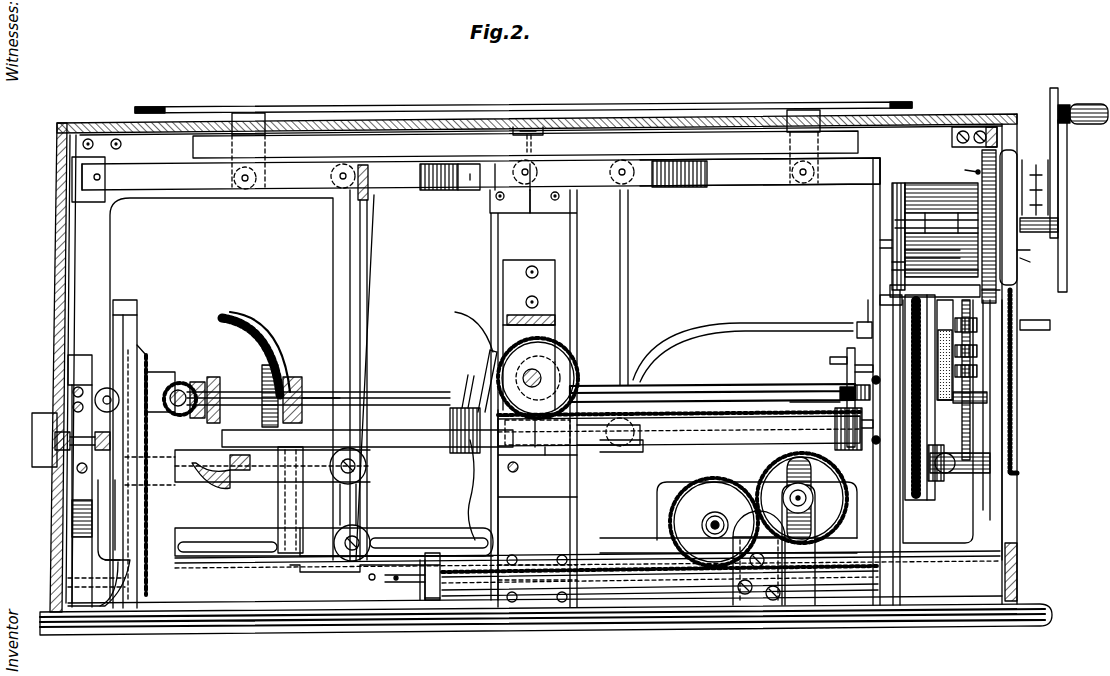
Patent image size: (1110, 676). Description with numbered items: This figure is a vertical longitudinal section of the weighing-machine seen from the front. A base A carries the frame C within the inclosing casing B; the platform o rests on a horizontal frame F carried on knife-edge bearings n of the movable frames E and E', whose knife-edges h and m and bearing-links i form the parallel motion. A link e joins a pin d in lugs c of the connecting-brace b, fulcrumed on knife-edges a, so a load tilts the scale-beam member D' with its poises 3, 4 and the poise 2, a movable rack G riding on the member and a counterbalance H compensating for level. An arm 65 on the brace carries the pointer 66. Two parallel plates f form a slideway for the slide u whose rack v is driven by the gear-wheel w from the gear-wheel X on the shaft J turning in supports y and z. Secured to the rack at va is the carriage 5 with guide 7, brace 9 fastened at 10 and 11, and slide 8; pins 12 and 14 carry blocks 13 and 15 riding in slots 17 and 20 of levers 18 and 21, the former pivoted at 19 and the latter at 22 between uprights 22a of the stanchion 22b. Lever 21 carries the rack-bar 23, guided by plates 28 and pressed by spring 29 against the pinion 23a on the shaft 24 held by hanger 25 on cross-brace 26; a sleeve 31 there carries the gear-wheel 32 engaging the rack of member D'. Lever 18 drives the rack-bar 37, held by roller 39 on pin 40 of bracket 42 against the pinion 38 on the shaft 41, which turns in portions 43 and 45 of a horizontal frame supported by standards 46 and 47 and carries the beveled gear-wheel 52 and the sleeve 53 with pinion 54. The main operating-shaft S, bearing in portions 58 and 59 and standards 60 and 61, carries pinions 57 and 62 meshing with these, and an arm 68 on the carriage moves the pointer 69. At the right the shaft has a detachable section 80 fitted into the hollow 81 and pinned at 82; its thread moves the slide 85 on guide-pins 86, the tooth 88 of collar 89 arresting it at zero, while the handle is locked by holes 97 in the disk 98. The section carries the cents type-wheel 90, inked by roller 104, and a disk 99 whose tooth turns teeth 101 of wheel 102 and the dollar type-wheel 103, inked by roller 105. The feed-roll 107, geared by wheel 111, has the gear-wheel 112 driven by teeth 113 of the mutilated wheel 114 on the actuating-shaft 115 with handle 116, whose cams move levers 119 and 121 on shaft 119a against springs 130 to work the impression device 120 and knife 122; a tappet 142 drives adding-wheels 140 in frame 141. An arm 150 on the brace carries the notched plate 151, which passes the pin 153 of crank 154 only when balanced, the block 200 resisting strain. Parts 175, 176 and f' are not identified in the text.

The inclosing casing B is at (56, 249).
The base A is at (268, 627).
The slide u is at (850, 626).
The platform or table o is at (605, 107).
The indicating hand or pointer 66 is at (530, 133).
The horizontal frame F is at (858, 141).
The movable frame E is at (481, 192).
The additional movable frame E' is at (760, 192).
The knife-edge bearings h is at (100, 177).
The knife-edge bearings n is at (245, 191).
The side brace 9 is at (440, 186).
The securing points of side brace 10 is at (365, 198).
The guide or slideway 7 is at (345, 318).
The bearing-links i is at (537, 172).
The roller f' is at (607, 172).
The upwardly-extending arm 65 is at (499, 240).
The frame or supporting structure C is at (572, 495).
The link e is at (628, 276).
The cross-brace 26 is at (556, 310).
The hanger 25 is at (556, 338).
The transverse shaft 24 is at (538, 378).
The sleeve 31 is at (538, 380).
The gear-wheel 32 is at (575, 376).
The pinion or gear-wheel 23a is at (464, 327).
The vertical rack-bar 23 is at (485, 352).
The spring 29 is at (464, 392).
The poise 3 is at (450, 420).
The main operating-shaft S is at (716, 385).
The arm or member 150 is at (714, 335).
The scale-beam member D' is at (679, 439).
The movable rack G is at (780, 440).
The lugs or offsets c is at (625, 445).
The pin d is at (645, 440).
The knife-edge bearings a is at (537, 420).
The connecting-brace b is at (549, 460).
The gear-wheel w is at (660, 510).
The vertical support y is at (690, 500).
The vertical support z is at (806, 553).
The transverse shaft J is at (810, 498).
The fulcrum or pivot 19 is at (757, 560).
The rack v is at (612, 577).
The parallel plate f is at (660, 620).
The securing point of side brace 11 is at (436, 576).
The securing point of carriage va is at (395, 582).
The forwardly-projecting arm 68 is at (418, 599).
The indicating hand or pointer 69 is at (428, 601).
The carriage 5 is at (345, 566).
The beveled pinion 62 is at (358, 441).
The lever 21 is at (248, 471).
The longitudinal slot 20 is at (190, 487).
The pin or axial member 14 is at (340, 478).
The pin or axial member 12 is at (365, 533).
The standard 46 is at (128, 292).
The longitudinal slot 17 is at (215, 545).
The lever 18 is at (255, 545).
The block 15 is at (385, 522).
The block 13 is at (396, 540).
The guide-plates 28 is at (480, 500).
The slide 8 is at (347, 505).
The small beveled pinion 54 is at (200, 385).
The portion of horizontal frame 58 is at (220, 395).
The portion of horizontal frame 43 is at (270, 365).
The portion of horizontal frame 59 is at (302, 395).
The beveled pinion 57 is at (290, 385).
The transverse shaft 41 is at (171, 403).
The portion of horizontal frame 45 is at (166, 395).
The enlarged beveled gear-wheel 52 is at (236, 325).
The pinion or gear-wheel 38 is at (160, 372).
The rack-bar 37 is at (137, 343).
The sleeve 53 is at (165, 470).
The upright portions 22a is at (80, 355).
The fulcrum or pivot 22 is at (76, 470).
The stanchion 22b is at (70, 540).
The standard 47 is at (160, 592).
The antifriction-roller 39 is at (100, 392).
The stud or pin 40 is at (103, 400).
The counterbalance or adjusting device H is at (32, 440).
The bracket 42 is at (92, 422).
The gear-wheel X is at (848, 488).
The poise 2 is at (896, 447).
The lever 121 is at (898, 198).
The springs 130 is at (960, 195).
The knife-edge bearings m is at (965, 171).
The shaft 119a is at (898, 220).
The crank or arm 154 is at (870, 242).
The intermittent feed-roll 107 is at (892, 263).
The lever 119 is at (903, 256).
The impression device 120 is at (892, 272).
The pin 153 is at (880, 298).
The knife or cutting device 122 is at (935, 288).
The vertically-disposed plate 151 is at (860, 320).
The stationary block or resisting device 200 is at (857, 330).
The teeth of mutilated gear-wheel 113 is at (994, 162).
The frame 141 is at (1018, 262).
The actuating-shaft 115 is at (1030, 233).
The adding-wheels 140 is at (1045, 222).
The bar 175 is at (1050, 94).
The gear-wheel 111 is at (1067, 290).
The hub 176 is at (1066, 110).
The operating crank or handle 116 is at (1082, 126).
The tappet 142 is at (1032, 252).
The mutilated gear-wheel 114 is at (1032, 262).
The gear-wheel 112 is at (1001, 290).
The shaft-section 80 is at (928, 397).
The disk 99 is at (942, 425).
The standard or upright 60 is at (896, 532).
The inking-roller 104 is at (960, 491).
The cents type-wheel 90 is at (938, 480).
The inking-roller 105 is at (988, 398).
The teeth 101 is at (978, 340).
The wheel 102 is at (978, 352).
The type-wheel 103 is at (978, 360).
The circular plate or disk 98 is at (1017, 410).
The holes or openings 97 is at (1002, 470).
The standard or upright 61 is at (992, 512).
The guide-pins 86 is at (848, 362).
The slide 85 is at (832, 360).
The tooth 88 is at (845, 370).
The pin 82 is at (840, 390).
The hollow portion 81 is at (846, 388).
The collar 89 is at (840, 399).
The poise 4 is at (850, 450).